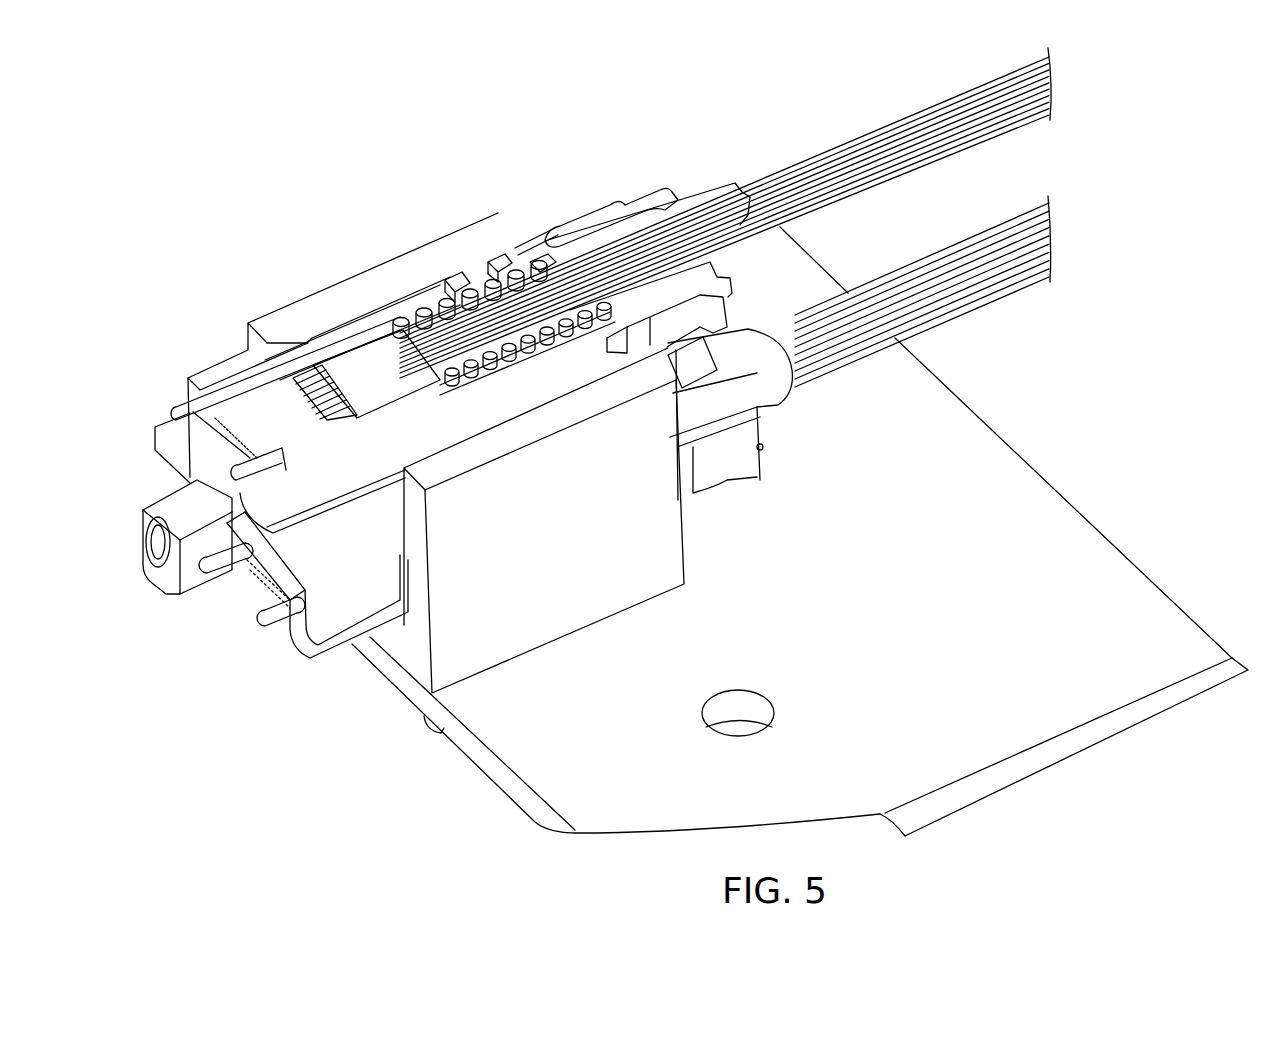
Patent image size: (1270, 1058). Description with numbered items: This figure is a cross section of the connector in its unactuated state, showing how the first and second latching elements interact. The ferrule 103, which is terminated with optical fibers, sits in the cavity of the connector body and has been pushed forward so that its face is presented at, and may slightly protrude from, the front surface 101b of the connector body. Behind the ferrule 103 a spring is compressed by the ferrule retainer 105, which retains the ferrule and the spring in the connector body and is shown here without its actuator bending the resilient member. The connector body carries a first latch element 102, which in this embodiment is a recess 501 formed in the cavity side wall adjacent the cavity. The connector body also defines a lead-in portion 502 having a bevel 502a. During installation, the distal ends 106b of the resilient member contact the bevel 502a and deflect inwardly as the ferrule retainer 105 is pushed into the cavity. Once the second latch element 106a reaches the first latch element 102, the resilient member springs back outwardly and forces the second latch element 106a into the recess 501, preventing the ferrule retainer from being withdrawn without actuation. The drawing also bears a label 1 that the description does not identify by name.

The printed circuit board 1 is at (340, 368).
The front surface 101b is at (203, 477).
The first latch element 102 is at (725, 213).
The ferrule 103 is at (282, 590).
The ferrule retainer 105 is at (633, 215).
The second latch element 106a is at (495, 262).
The distal ends 106b is at (452, 280).
The recess 501 is at (523, 268).
The lead-in portion 502 is at (535, 262).
The bevel 502a is at (548, 253).